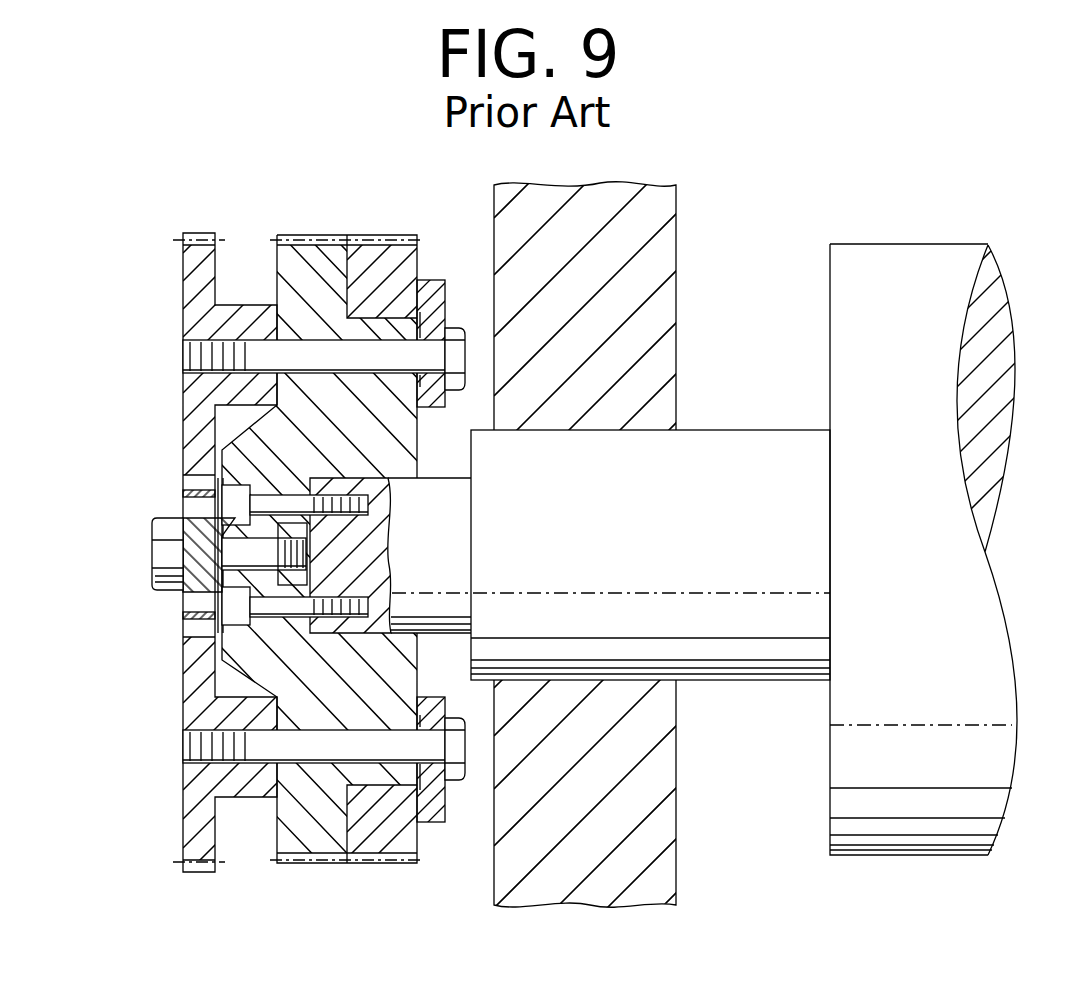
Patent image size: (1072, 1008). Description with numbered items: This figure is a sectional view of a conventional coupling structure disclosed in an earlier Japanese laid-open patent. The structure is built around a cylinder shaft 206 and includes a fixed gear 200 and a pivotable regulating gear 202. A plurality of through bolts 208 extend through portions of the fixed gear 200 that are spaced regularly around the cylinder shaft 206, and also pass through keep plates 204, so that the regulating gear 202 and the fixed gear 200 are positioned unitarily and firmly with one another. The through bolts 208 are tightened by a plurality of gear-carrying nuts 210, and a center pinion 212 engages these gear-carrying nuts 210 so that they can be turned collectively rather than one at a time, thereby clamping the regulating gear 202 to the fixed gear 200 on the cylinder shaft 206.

The fixed gear 200 is at (301, 270).
The pivotable regulating gear 202 is at (377, 268).
The keep plate 204 is at (431, 283).
The cylinder shaft 206 is at (728, 462).
The through bolt 208 is at (274, 352).
The gear-carrying nut 210 is at (193, 297).
The center pinion 212 is at (200, 573).